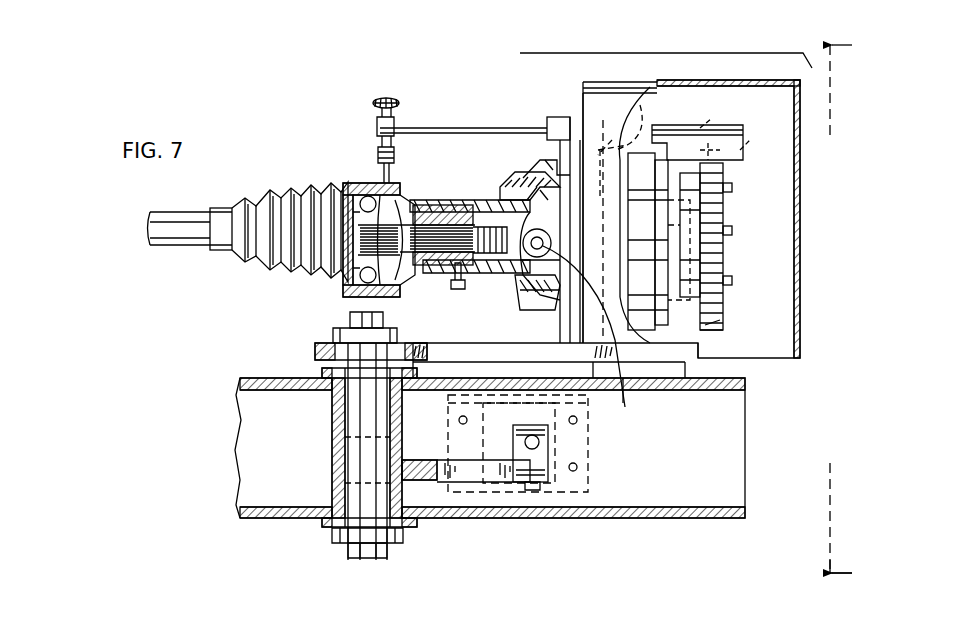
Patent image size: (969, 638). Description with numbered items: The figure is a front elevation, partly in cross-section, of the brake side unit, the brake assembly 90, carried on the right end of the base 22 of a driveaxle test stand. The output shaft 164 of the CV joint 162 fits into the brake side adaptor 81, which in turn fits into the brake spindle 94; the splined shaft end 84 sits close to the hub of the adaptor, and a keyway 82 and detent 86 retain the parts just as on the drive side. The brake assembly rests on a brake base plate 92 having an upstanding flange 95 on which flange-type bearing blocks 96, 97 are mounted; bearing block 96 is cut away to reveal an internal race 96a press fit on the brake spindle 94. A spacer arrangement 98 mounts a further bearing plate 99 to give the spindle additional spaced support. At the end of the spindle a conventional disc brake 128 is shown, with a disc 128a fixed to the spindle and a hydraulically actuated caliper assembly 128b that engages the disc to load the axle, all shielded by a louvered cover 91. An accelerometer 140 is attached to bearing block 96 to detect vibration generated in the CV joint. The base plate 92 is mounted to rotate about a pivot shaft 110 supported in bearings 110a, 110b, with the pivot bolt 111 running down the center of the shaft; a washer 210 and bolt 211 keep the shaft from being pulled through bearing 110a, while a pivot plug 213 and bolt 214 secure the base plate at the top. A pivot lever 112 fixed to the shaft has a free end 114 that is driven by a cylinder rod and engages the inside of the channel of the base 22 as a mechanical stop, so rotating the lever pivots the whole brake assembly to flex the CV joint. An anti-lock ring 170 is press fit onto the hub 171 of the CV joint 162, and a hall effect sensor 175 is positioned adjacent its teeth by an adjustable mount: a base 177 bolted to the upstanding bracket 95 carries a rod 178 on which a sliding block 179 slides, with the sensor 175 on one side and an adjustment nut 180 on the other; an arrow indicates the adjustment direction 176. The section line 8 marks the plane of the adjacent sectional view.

The section line 8- 8 is at (850, 311).
The base 22 is at (660, 518).
The brake side adaptor 81 is at (377, 143).
The keyway 82 is at (458, 208).
The shaft end 84 is at (428, 255).
The detent 86 is at (463, 291).
The brake assembly 90 is at (663, 53).
The cover 91 is at (798, 158).
The brake base plate 92 is at (708, 330).
The brake spindle 94 is at (492, 207).
The upstanding flange 95 is at (577, 110).
The flange-type bearing block 96 is at (547, 162).
The internal race 96a is at (513, 192).
The flange-type bearing block 97 is at (617, 110).
The spacer arrangement 98 is at (673, 129).
The bearing plate 99 is at (752, 129).
The pivot shaft 110 is at (355, 495).
The bearing 110a is at (405, 520).
The bearing 110b is at (337, 363).
The pivot bolt 111 is at (392, 497).
The pivot lever 112 is at (493, 478).
The free end of the pivot arm 114 is at (530, 487).
The disc brake 128 is at (727, 203).
The brake disc 128a is at (742, 381).
The caliper assembly 128b is at (703, 127).
The accelerometer 140 is at (617, 97).
The CV joint 162 is at (355, 185).
The output shaft 164 is at (428, 228).
The anti-lock ring 170 is at (352, 178).
The hub 171 is at (357, 375).
The hall effect sensor 175 is at (373, 157).
The connecting rod 176 is at (442, 107).
The base 177 is at (573, 113).
The rod 178 is at (422, 123).
The sliding block 179 is at (373, 100).
The adjustment nut 180 is at (380, 98).
The washer 210 is at (345, 545).
The bolt 211 is at (368, 560).
The pivot plug 213 is at (398, 337).
The bolt 214 is at (352, 322).